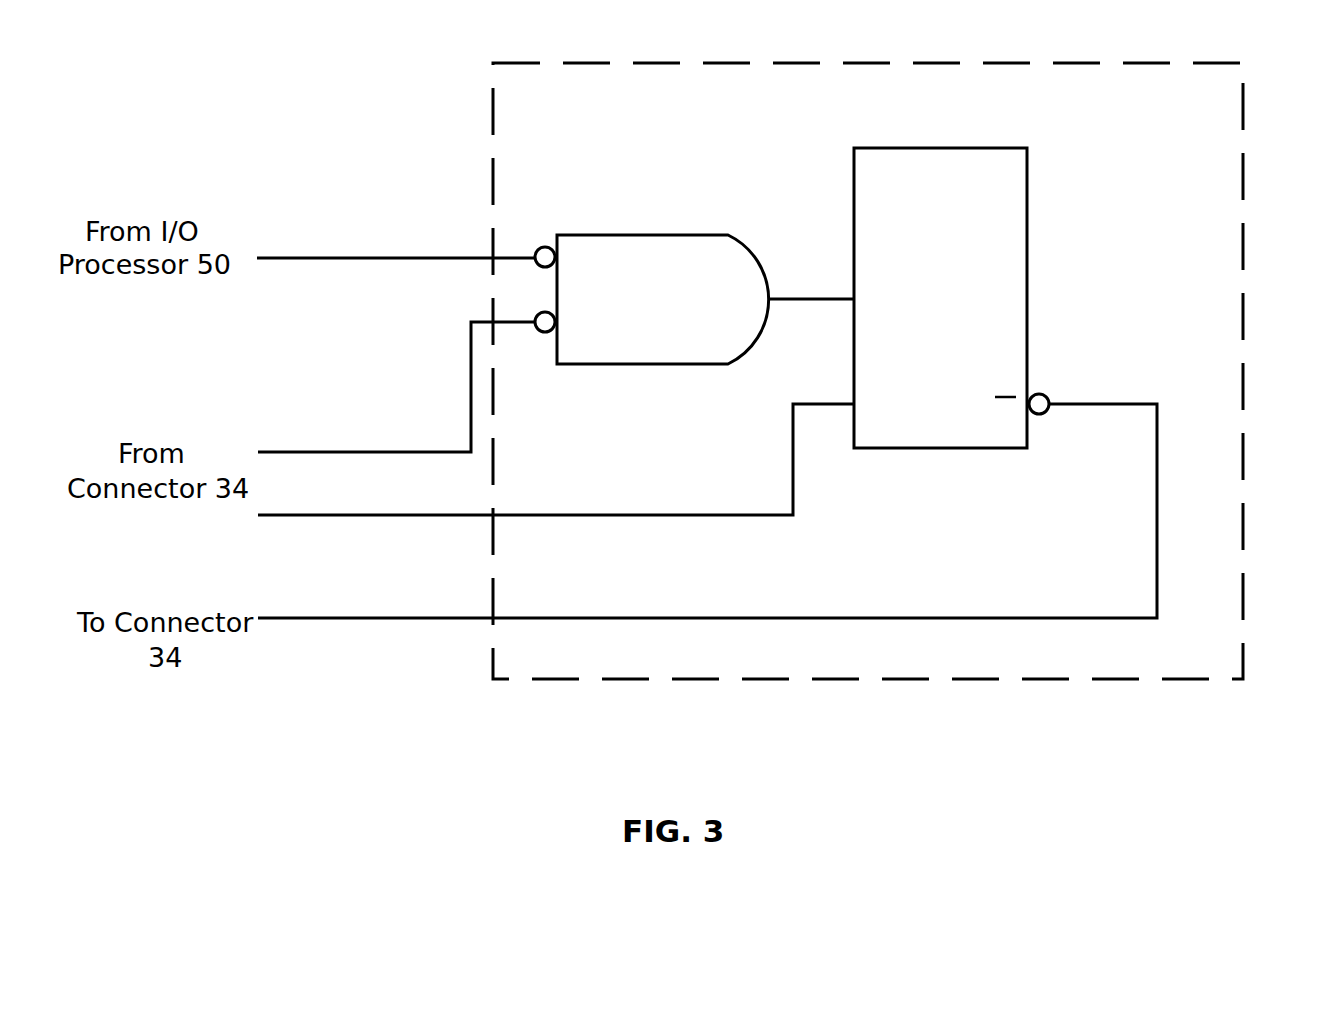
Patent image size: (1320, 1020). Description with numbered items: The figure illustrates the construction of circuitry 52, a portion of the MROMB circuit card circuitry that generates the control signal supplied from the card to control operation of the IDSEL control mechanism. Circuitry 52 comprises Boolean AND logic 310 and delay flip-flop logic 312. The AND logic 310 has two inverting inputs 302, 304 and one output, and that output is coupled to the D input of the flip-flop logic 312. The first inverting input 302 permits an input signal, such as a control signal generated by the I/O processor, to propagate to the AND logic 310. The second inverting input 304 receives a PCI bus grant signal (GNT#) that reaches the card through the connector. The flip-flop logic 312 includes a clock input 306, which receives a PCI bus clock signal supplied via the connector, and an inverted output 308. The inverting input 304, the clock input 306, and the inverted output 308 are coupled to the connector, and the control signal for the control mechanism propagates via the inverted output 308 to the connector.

The circuitry 52 is at (783, 63).
The inverting input 302 is at (290, 258).
The inverting input 304 is at (290, 452).
The clock input 306 is at (366, 516).
The inverted output 308 is at (366, 619).
The Boolean AND logic 310 is at (610, 235).
The delay flip-flop logic 312 is at (873, 148).